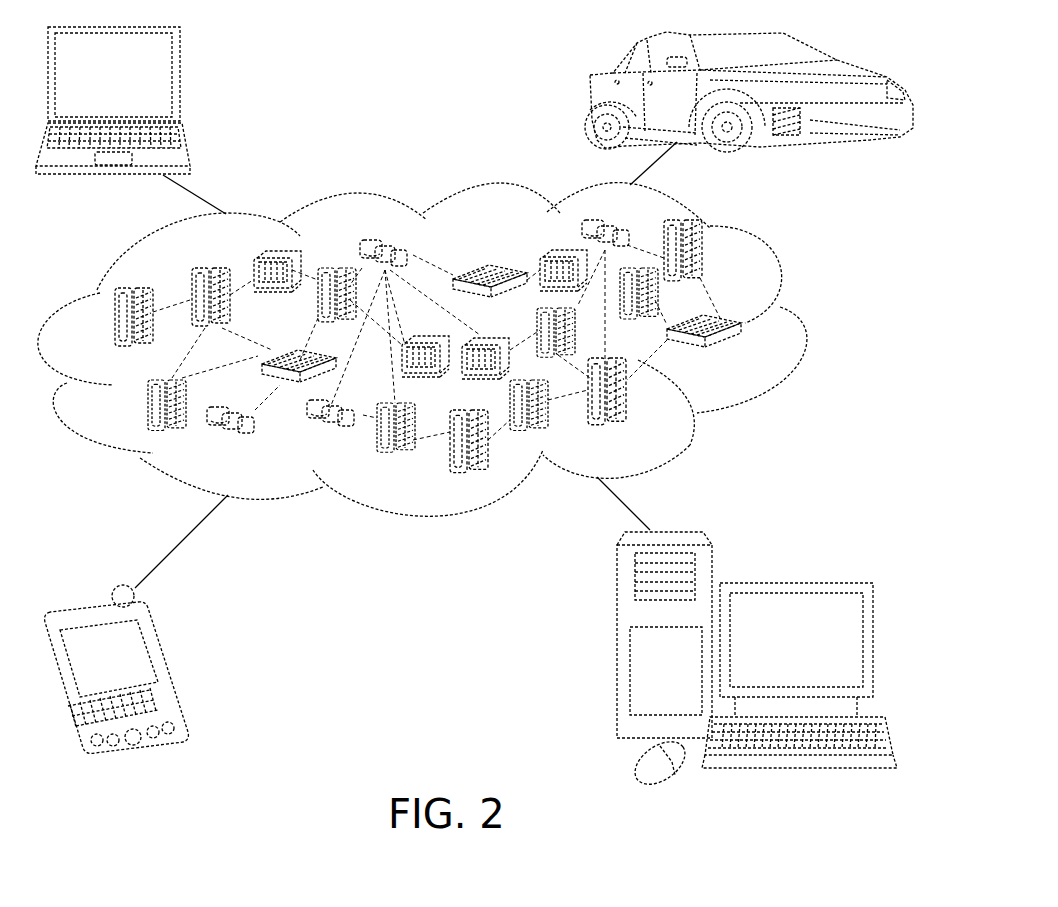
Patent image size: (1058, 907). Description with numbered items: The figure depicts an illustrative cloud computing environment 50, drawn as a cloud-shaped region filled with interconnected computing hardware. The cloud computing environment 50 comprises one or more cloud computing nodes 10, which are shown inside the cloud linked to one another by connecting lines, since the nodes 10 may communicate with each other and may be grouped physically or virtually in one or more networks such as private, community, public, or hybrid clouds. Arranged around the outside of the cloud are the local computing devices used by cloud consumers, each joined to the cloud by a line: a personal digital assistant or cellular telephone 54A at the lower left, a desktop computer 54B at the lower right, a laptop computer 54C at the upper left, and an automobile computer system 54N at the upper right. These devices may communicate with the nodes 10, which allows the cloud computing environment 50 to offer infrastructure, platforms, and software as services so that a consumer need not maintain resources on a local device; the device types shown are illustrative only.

The cloud computing node 10 is at (742, 353).
The cloud computing environment 50 is at (792, 325).
The personal digital assistant or cellular telephone 54A is at (170, 670).
The desktop computer 54B is at (794, 583).
The laptop computer 54C is at (178, 82).
The automobile computer system 54N is at (587, 98).